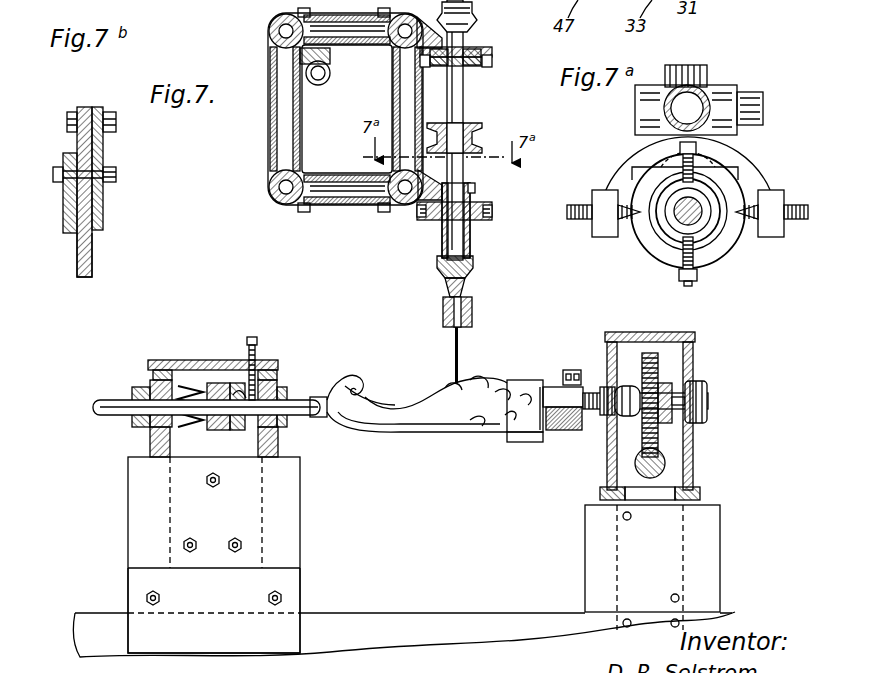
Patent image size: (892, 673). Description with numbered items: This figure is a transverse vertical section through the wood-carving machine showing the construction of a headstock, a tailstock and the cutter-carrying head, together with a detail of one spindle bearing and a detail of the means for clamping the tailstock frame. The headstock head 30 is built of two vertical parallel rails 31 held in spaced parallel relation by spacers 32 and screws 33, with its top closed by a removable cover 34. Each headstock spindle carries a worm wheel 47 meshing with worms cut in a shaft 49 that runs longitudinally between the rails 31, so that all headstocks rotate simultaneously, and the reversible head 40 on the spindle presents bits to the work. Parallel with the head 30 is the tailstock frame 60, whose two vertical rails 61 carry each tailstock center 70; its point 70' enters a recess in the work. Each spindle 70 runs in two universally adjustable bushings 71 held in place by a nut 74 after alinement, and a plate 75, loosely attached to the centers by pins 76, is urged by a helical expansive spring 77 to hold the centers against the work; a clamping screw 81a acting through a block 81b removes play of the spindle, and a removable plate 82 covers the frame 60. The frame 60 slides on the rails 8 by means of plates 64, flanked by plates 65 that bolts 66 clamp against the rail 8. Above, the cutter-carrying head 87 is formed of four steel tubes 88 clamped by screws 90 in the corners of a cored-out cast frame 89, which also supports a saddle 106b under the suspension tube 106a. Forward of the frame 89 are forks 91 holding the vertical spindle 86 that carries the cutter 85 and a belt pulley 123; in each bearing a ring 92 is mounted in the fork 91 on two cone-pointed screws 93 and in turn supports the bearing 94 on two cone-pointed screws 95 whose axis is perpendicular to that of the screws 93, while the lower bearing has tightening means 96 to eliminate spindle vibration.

In FIG. 7B, the rails 8 is at (92, 264).
In FIG. 7, the rails 8 is at (430, 623).
In FIG. 7, the head 30 is at (646, 470).
In FIG. 7, the vertical parallel rails 31 is at (607, 450).
In FIG. 7, the spacers 32 is at (652, 500).
In FIG. 7, the screws 33 is at (605, 495).
In FIG. 7, the removable cover 34 is at (688, 333).
In FIG. 7, the reversible head 40 is at (572, 370).
In FIG. 7, the worm wheel 47 is at (648, 353).
In FIG. 7, the shaft 49 is at (638, 463).
In FIG. 7, the tailstock frame 60 is at (208, 404).
In FIG. 7, the vertical parallel rails 61 is at (150, 447).
In FIG. 7B, the plates 64 is at (80, 107).
In FIG. 7, the plates 64 is at (300, 497).
In FIG. 7B, the plates 65 is at (104, 208).
In FIG. 7, the plates 65 is at (299, 588).
In FIG. 7B, the bolts 66 is at (112, 165).
In FIG. 7, the bolts 66 is at (268, 598).
In FIG. 7, the tailstock center or spindle 70 is at (242, 419).
In FIG. 7, the point 70' is at (426, 392).
In FIG. 7, the universally adjustable bushings 71 is at (132, 425).
In FIG. 7, the nut 74 is at (277, 383).
In FIG. 7, the plate 75 is at (229, 432).
In FIG. 7, the pins 76 is at (217, 396).
In FIG. 7, the helical expansive spring 77 is at (198, 420).
In FIG. 7, the clamping or locking screw 81a is at (256, 338).
In FIG. 7, the block 81b is at (235, 386).
In FIG. 7, the removable plate 82 is at (163, 360).
In FIG. 7, the cutters 85 is at (460, 343).
In FIG. 7, the vertical spindles 86 is at (465, 88).
In FIG. 7A, the vertical spindles 86 is at (679, 222).
In FIG. 7, the cutter-carrying head 87 is at (333, 122).
In FIG. 7, the steel tubing 88 is at (392, 46).
In FIG. 7A, the steel tubing 88 is at (763, 101).
In FIG. 7, the transverse cast-metal frames 89 is at (280, 162).
In FIG. 7A, the transverse cast-metal frames 89 is at (708, 76).
In FIG. 7, the clamping screws 90 is at (388, 45).
In FIG. 7, the forks 91 is at (447, 183).
In FIG. 7A, the forks 91 is at (762, 173).
In FIG. 7, the ring 92 is at (478, 48).
In FIG. 7A, the ring 92 is at (728, 248).
In FIG. 7A, the cone-pointed screws 93 is at (573, 226).
In FIG. 7, the bearing 94 is at (470, 64).
In FIG. 7A, the bearing 94 is at (702, 230).
In FIG. 7A, the cone-pointed screws 95 is at (700, 166).
In FIG. 7, the tightening means 96 is at (474, 262).
In FIG. 7, the steel tube 106a is at (318, 86).
In FIG. 7, the saddles 106b is at (300, 57).
In FIG. 7, the pulleys 123 is at (482, 126).